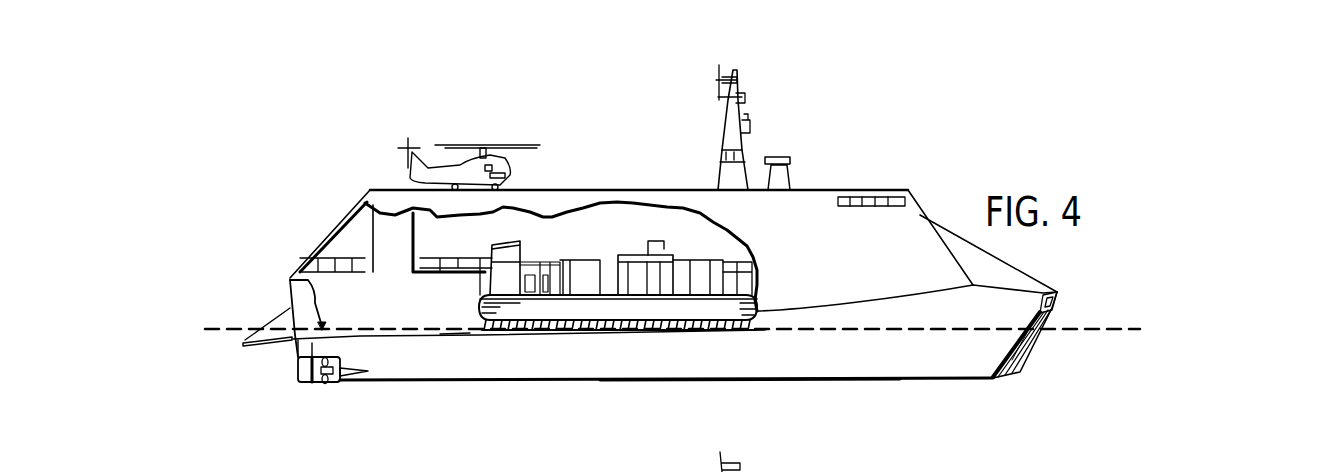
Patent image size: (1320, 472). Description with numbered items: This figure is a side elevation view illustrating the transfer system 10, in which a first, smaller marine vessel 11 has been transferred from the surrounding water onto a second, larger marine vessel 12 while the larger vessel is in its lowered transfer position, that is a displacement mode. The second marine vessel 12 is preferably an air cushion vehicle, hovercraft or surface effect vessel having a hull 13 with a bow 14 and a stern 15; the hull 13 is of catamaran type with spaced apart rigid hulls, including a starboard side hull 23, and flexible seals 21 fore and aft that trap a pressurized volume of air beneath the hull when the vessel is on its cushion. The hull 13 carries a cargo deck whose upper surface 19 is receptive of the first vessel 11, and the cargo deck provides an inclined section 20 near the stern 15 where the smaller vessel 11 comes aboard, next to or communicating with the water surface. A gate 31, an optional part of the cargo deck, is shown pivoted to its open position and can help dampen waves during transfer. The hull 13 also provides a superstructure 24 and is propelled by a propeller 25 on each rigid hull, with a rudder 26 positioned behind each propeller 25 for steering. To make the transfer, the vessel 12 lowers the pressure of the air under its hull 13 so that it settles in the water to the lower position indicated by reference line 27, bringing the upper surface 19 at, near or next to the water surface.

The transfer system 10 is at (248, 93).
The first marine vessel 11 is at (588, 302).
The second marine vessel 12 is at (945, 222).
The hull 13 is at (673, 368).
The bow 14 is at (980, 365).
The stern 15 is at (340, 387).
The upper surface 19 is at (455, 320).
The inclined section 20 is at (290, 281).
The flexible seals 21 is at (1025, 355).
The starboard side hull 23 is at (862, 370).
The superstructure 24 is at (810, 200).
The propeller 25 is at (324, 384).
The rudder 26 is at (297, 373).
The reference line 27 is at (218, 326).
The gate 31 is at (243, 343).